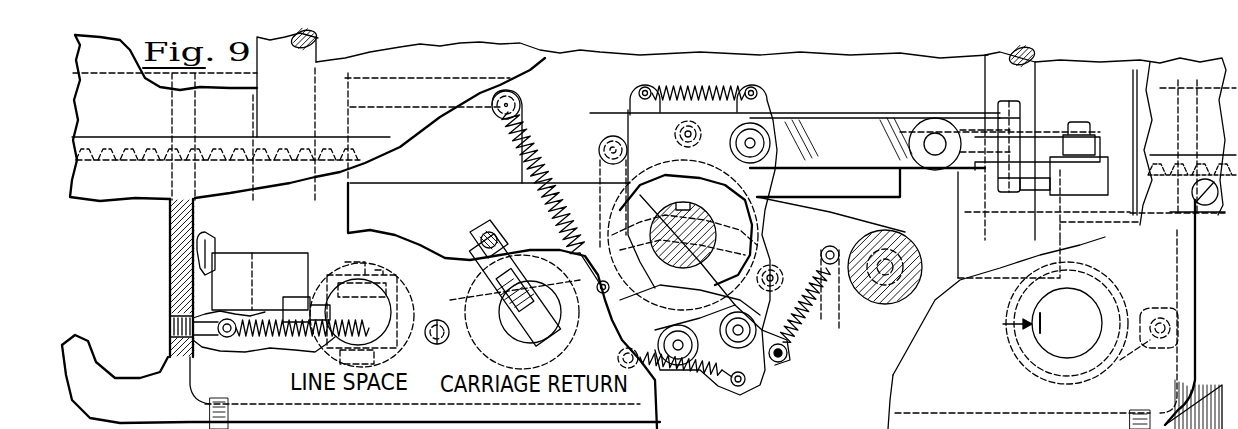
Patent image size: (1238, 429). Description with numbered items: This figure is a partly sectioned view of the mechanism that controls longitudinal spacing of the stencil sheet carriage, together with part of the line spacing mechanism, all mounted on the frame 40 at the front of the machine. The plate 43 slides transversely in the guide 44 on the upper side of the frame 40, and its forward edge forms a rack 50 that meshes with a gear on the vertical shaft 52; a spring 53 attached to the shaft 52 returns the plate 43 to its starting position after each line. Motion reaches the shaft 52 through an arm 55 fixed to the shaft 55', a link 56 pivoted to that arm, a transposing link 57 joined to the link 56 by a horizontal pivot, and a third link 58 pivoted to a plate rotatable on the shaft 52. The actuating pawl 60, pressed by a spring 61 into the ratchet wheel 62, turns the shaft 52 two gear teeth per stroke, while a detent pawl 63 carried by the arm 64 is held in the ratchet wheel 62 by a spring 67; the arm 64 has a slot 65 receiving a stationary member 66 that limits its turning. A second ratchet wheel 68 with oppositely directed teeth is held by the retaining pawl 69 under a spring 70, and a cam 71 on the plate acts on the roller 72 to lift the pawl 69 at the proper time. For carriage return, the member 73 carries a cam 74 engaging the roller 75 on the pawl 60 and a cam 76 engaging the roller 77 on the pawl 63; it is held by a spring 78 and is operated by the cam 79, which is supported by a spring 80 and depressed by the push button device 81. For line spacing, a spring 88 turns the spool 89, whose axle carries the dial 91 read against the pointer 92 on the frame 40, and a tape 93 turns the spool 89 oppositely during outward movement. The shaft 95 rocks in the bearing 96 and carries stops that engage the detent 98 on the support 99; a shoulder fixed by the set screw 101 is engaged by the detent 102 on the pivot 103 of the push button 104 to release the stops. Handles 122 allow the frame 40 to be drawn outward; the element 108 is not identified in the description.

The frame 40 is at (1186, 298).
The plate 43 is at (238, 100).
The guide 44 is at (232, 140).
The rack 50 is at (121, 156).
The vertical shaft 52 is at (702, 215).
The spring 53 is at (628, 108).
The arm 55 is at (1079, 186).
The shaft 55' is at (1026, 142).
The link 56 is at (1040, 142).
The transposing link 57 is at (963, 124).
The third link 58 is at (863, 130).
The actuating pawl 60 is at (765, 103).
The spring 61 is at (710, 88).
The ratchet wheel 62 is at (610, 164).
The detent pawl 63 is at (764, 360).
The arm 64 is at (847, 219).
The slot 65 is at (912, 238).
The stationary member 66 is at (912, 258).
The spring 67 is at (810, 305).
The ratchet wheel 68 is at (810, 222).
The retaining pawl 69 is at (704, 380).
The spring 70 is at (676, 378).
The cam 71 is at (705, 290).
The roller 72 is at (655, 335).
The member 73 is at (612, 358).
The cam 74 is at (735, 162).
The roller 75 is at (700, 130).
The cam 76 is at (772, 266).
The roller 77 is at (697, 300).
The spring 78 is at (538, 204).
The cam 79 is at (522, 312).
The spring 80 is at (501, 255).
The push button device 81 is at (543, 300).
The spring 88 is at (1138, 360).
The spool 89 is at (1045, 364).
The dial 91 is at (1078, 355).
The pointer 92 is at (1030, 325).
The tape 93 is at (1133, 95).
The shaft 95 is at (305, 64).
The bearing 96 is at (338, 220).
The detent 98 is at (262, 262).
The support 99 is at (281, 331).
The set screw 101 is at (204, 255).
The detent 102 is at (405, 300).
The pivot 103 is at (385, 356).
The push button 104 is at (380, 302).
The stud 108 is at (448, 340).
The handles 122 is at (80, 347).